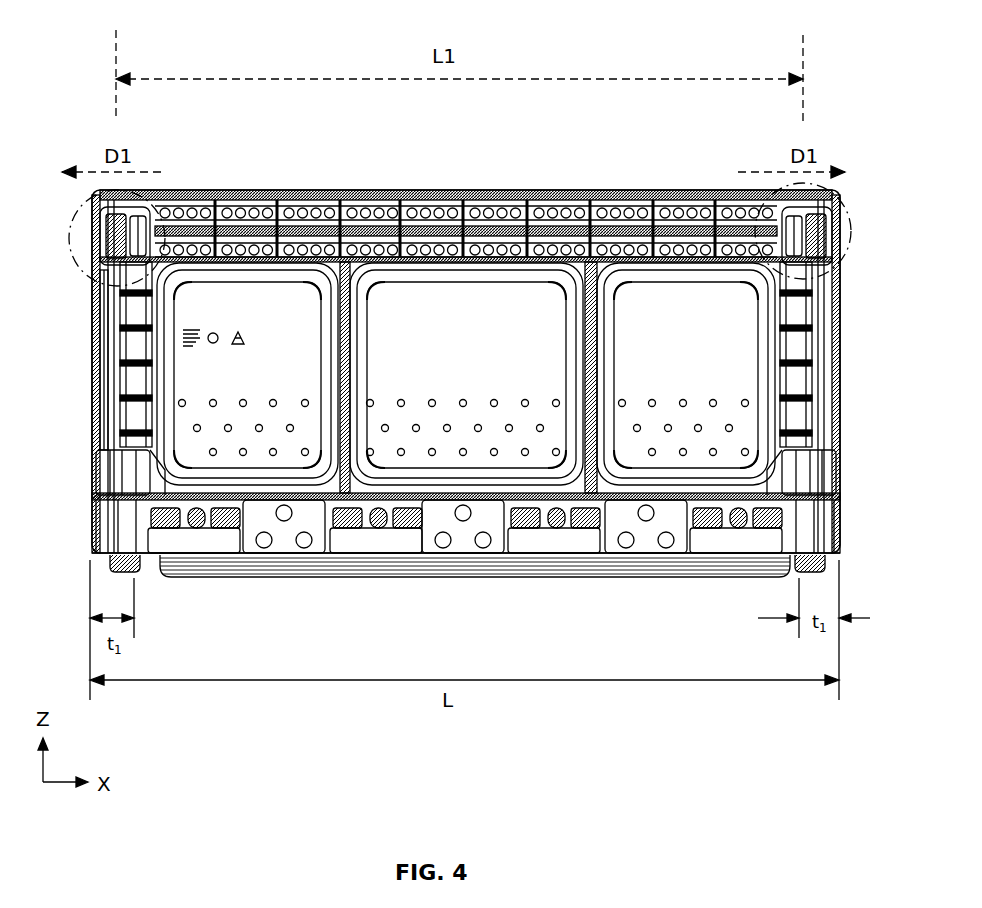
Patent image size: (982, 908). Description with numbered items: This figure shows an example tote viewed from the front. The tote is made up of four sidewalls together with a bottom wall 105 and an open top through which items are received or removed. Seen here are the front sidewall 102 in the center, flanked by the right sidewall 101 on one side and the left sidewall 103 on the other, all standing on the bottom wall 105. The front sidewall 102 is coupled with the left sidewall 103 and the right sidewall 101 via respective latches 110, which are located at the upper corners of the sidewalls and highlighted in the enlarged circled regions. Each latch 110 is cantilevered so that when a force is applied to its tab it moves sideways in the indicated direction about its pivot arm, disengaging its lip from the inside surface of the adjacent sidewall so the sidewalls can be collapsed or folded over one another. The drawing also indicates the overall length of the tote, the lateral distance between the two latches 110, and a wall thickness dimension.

The right sidewall 101 is at (838, 356).
The front sidewall 102 is at (725, 338).
The left sidewall 103 is at (98, 392).
The bottom wall 105 is at (253, 570).
The latch 110 is at (74, 256).